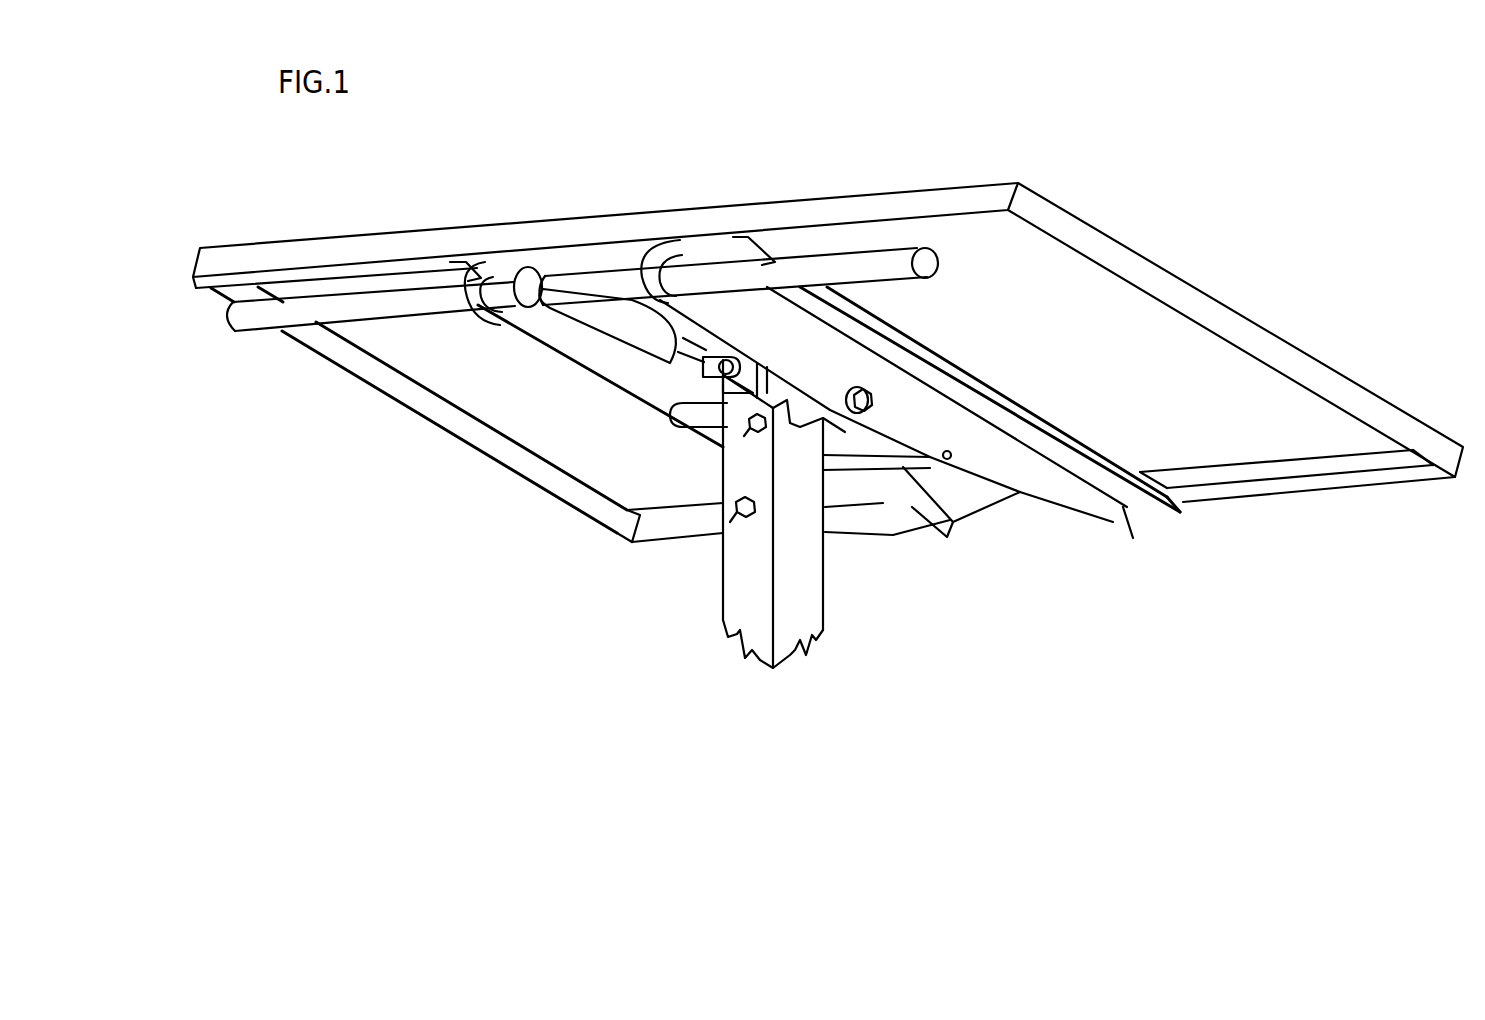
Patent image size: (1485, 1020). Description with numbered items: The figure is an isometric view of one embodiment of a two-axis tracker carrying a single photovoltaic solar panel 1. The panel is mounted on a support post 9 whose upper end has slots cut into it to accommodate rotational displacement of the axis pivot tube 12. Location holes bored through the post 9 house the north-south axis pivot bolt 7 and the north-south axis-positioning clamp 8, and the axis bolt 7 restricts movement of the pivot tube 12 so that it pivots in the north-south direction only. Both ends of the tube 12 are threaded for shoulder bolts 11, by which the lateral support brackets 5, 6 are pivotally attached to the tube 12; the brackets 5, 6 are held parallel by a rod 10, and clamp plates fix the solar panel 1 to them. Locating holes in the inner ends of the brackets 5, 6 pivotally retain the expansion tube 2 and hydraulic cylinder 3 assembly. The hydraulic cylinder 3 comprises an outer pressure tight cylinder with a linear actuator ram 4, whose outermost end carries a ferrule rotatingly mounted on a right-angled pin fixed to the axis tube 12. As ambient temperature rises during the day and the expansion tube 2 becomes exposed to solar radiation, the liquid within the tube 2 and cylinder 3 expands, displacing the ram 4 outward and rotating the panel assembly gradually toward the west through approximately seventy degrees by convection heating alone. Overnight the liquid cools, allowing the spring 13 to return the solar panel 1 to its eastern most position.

The solar panel 1 is at (1152, 254).
The expansion tube 2 is at (252, 338).
The hydraulic cylinder 3 is at (556, 327).
The linear actuator ram 4 is at (682, 362).
The lateral support bracket 5 is at (632, 411).
The lateral support bracket 6 is at (1064, 488).
The north-south axis pivot bolt 7 is at (742, 435).
The north-south axis-positioning clamp 8 is at (727, 527).
The support post 9 is at (818, 595).
The rod 10 is at (876, 468).
The shoulder bolt 11 is at (875, 413).
The axis pivot tube 12 is at (686, 427).
The spring 13 is at (840, 430).